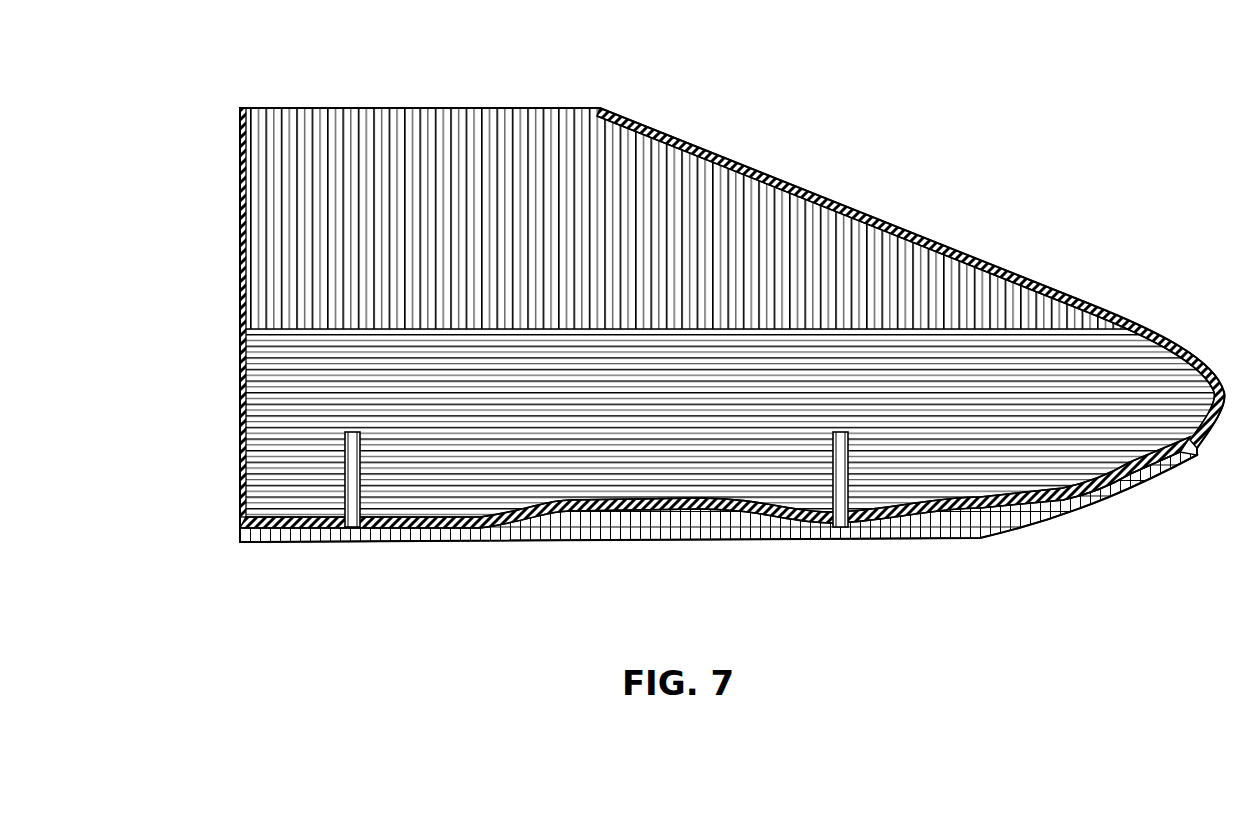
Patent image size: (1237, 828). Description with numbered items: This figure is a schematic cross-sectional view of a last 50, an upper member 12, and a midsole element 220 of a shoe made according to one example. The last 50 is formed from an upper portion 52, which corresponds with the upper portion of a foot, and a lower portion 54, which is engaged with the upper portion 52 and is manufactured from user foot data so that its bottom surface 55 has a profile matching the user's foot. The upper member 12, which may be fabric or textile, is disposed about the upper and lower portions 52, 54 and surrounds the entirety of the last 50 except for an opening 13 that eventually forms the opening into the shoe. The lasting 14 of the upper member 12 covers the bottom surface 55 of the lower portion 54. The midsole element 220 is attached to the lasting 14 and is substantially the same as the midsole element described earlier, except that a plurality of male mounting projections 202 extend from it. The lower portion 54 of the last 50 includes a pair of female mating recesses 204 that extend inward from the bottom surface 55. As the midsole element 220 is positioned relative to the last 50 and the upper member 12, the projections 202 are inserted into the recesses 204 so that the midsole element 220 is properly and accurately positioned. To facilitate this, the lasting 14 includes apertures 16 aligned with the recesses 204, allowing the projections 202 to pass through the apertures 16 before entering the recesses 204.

The opening 13 is at (320, 100).
The upper member 12 is at (678, 133).
The last 50 is at (866, 208).
The upper portion 52 is at (255, 249).
The lower portion 54 is at (250, 416).
The lasting 14 is at (289, 533).
The apertures 16 is at (327, 521).
The male mounting projections 202 is at (363, 485).
The female mating recesses 204 is at (349, 493).
The midsole element 220 is at (514, 553).
The bottom surface 55 is at (1048, 497).